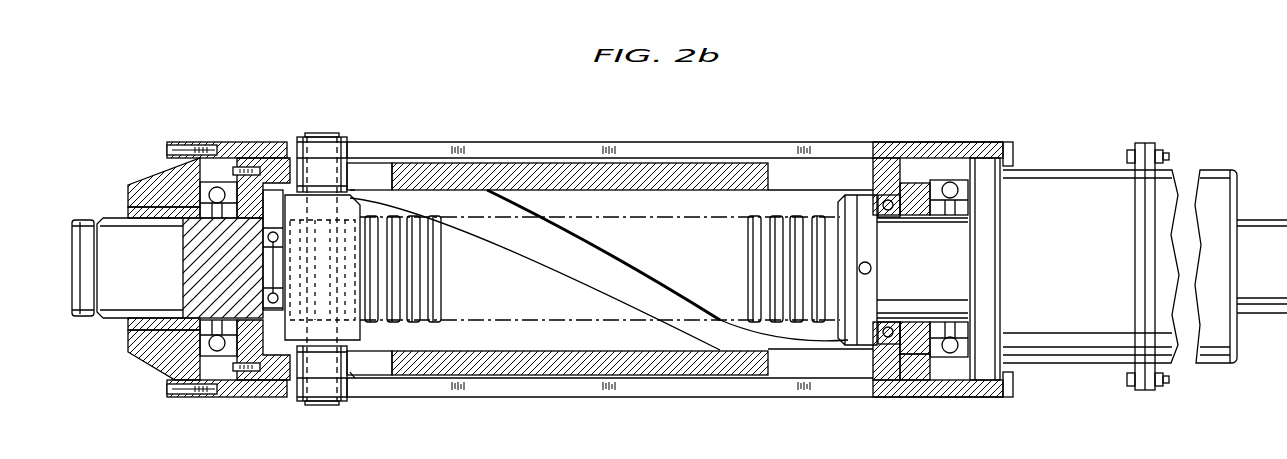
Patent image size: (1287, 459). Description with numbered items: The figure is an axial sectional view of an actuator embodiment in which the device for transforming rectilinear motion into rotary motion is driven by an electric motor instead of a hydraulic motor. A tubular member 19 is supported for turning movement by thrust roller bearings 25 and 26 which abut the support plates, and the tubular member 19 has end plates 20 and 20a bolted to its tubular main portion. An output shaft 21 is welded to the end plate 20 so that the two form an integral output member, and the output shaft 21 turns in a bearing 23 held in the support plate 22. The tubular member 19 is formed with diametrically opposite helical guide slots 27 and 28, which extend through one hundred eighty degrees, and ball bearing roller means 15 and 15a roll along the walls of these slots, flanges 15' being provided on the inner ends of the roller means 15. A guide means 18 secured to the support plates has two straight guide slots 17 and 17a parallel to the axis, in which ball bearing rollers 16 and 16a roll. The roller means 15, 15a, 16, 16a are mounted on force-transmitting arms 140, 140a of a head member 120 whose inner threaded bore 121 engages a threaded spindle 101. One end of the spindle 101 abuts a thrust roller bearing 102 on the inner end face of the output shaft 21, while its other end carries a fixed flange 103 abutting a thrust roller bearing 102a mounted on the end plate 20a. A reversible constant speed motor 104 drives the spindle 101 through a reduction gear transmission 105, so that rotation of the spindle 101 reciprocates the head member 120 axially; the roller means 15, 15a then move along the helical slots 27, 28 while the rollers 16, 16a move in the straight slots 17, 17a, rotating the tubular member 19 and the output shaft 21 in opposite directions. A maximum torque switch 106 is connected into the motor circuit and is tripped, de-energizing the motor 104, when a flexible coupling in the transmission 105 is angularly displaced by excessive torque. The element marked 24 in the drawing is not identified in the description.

The ball bearing roller means 15 is at (533, 235).
The flanges 15' is at (369, 187).
The ball bearing roller means 15a is at (352, 380).
The ball bearing roller 16 is at (350, 152).
The ball bearing roller 16a is at (352, 386).
The straight guide slot 17 is at (653, 142).
The straight guide slot 17a is at (802, 397).
The guide means 18 is at (897, 142).
The tubular member 19 is at (722, 382).
The end plate 20 is at (245, 165).
The end plate 20a is at (948, 358).
The output shaft 21 is at (86, 318).
The support plate 22 is at (162, 362).
The bearing 23 is at (128, 328).
The bearing retainer 24 is at (897, 380).
The thrust roller bearing 25 is at (997, 350).
The thrust roller bearing 26 is at (218, 358).
The helical guide slot 27 is at (660, 330).
The helical guide slot 28 is at (822, 180).
The spindle 101 is at (441, 323).
The thrust roller bearing 102 is at (276, 312).
The thrust roller bearing 102a is at (890, 325).
The fixed flange 103 is at (843, 340).
The constant speed motor 104 is at (1218, 358).
The reduction gear transmission 105 is at (1092, 348).
The maximum torque switch 106 is at (1262, 232).
The head member 120 is at (370, 363).
The inner threaded bore 121 is at (362, 323).
The force-transmitting arm 140 is at (331, 135).
The force-transmitting arm 140a is at (323, 405).